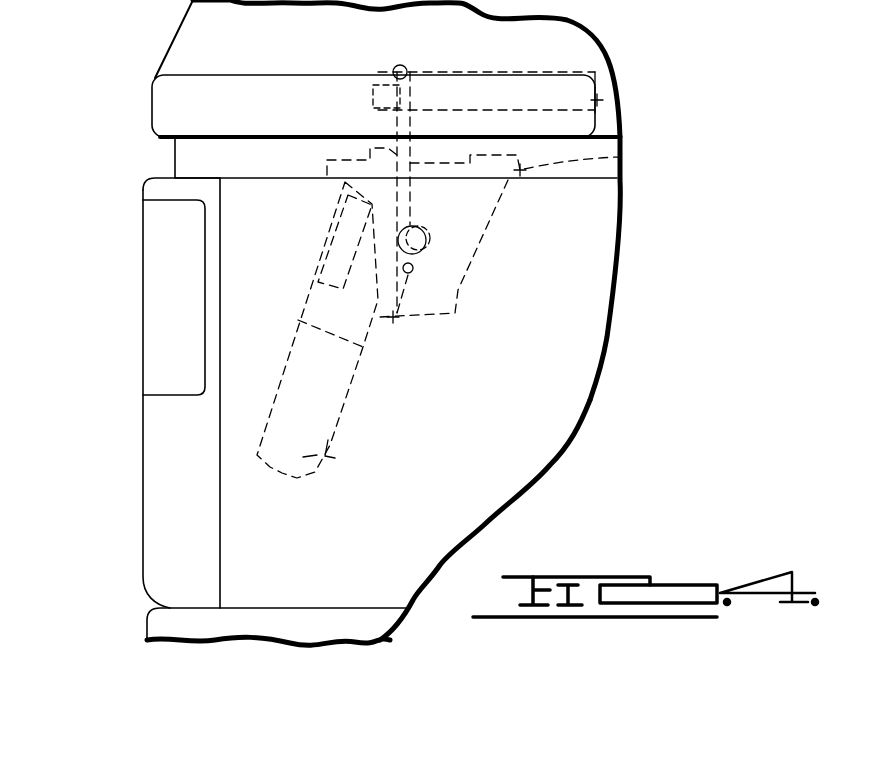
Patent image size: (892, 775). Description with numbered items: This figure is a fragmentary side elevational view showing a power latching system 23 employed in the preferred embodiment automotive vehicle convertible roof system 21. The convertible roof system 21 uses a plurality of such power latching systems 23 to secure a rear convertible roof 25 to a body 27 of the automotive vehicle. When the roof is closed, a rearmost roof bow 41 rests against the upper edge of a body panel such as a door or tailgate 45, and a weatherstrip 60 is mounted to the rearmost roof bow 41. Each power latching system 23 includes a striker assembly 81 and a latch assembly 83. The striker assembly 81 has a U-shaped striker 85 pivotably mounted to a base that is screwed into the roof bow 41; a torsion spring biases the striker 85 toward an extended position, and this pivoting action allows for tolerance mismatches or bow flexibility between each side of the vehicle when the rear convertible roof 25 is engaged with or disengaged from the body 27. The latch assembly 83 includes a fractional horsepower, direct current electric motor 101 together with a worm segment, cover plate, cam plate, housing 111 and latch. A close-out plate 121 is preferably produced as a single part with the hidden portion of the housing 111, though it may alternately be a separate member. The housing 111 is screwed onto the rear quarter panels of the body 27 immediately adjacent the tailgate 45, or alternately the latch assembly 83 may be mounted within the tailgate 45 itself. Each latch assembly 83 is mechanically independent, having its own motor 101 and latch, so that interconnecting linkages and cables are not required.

The automotive vehicle convertible roof system 21 is at (663, 72).
The power latching system 23 is at (560, 251).
The rear convertible roof 25 is at (188, 33).
The body 27 is at (483, 478).
The rearmost roof bow 41 is at (170, 100).
The tailgate 45 is at (160, 512).
The weatherstrip 60 is at (183, 155).
The striker assembly 81 is at (622, 100).
The latch assembly 83 is at (318, 398).
The striker 85 is at (394, 320).
The electric motor 101 is at (340, 447).
The housing 111 is at (467, 293).
The close-out plate 121 is at (620, 157).